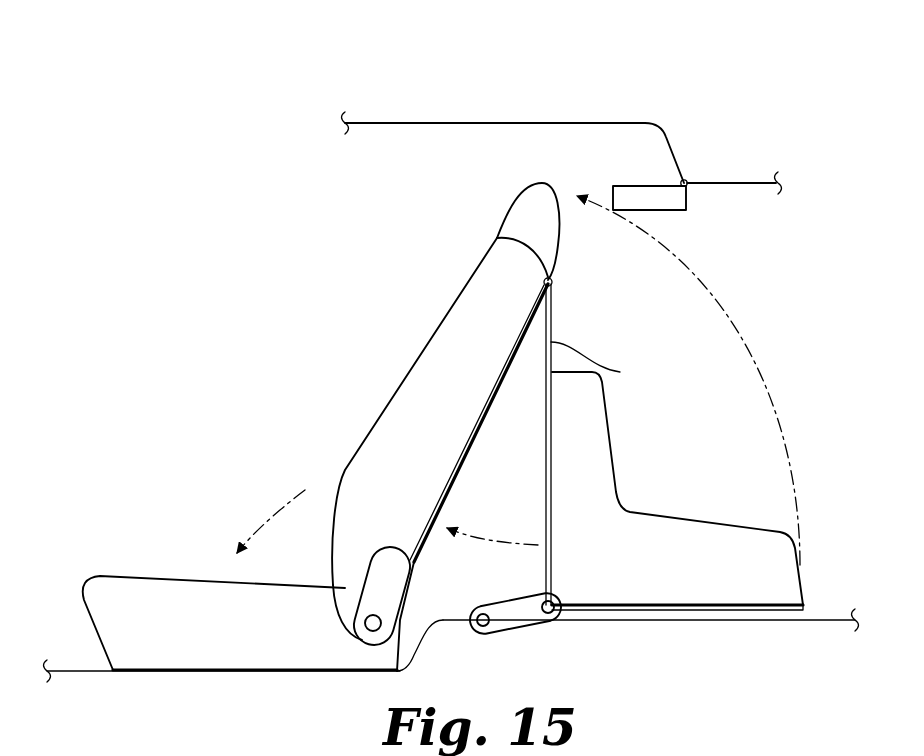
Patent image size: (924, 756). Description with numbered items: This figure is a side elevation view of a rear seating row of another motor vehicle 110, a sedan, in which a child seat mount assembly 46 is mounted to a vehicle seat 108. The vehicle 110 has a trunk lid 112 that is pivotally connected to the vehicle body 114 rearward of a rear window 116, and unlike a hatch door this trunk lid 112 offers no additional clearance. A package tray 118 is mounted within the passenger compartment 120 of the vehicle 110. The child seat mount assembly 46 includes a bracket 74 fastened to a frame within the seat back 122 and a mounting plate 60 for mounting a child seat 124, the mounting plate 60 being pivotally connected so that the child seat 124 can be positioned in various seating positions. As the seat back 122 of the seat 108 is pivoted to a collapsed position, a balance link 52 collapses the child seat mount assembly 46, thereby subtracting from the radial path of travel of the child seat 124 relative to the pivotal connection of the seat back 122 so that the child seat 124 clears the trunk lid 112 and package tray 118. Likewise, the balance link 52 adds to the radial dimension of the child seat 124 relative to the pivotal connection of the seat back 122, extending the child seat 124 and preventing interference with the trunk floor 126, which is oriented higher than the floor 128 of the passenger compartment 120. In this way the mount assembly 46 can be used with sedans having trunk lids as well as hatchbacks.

The motor vehicle 110 is at (752, 52).
The trunk lid 112 is at (731, 183).
The vehicle body 114 is at (620, 122).
The rear window 116 is at (679, 154).
The package tray 118 is at (650, 183).
The passenger compartment 120 is at (190, 350).
The vehicle seat 108 is at (420, 341).
The seat back 122 is at (378, 418).
The bracket 74 is at (478, 430).
The child seat mount assembly 46 is at (556, 322).
The mounting plate 60 is at (620, 372).
The child seat 124 is at (703, 522).
The balance link 52 is at (520, 628).
The trunk floor 126 is at (828, 619).
The floor 128 is at (78, 670).